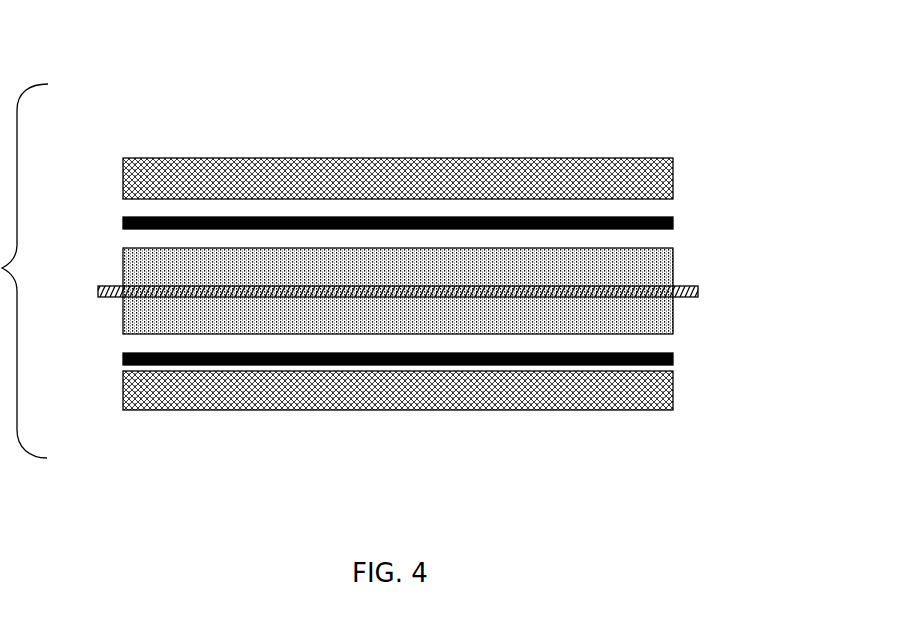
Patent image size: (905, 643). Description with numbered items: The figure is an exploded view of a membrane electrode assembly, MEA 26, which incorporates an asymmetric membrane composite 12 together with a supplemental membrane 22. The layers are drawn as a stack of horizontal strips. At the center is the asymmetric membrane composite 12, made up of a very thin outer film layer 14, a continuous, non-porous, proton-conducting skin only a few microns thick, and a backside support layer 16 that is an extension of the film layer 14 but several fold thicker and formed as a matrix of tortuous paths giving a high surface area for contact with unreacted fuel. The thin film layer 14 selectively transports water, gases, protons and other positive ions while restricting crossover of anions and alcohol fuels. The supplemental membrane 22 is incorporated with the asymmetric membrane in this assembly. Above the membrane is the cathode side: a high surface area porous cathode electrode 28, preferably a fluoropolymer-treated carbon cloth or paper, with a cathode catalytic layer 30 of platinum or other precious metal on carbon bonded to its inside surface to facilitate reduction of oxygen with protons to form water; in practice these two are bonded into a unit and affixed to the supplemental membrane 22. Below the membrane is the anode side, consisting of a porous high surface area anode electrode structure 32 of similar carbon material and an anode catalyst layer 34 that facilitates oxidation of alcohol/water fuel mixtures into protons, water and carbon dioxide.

The asymmetric membrane composite 12 is at (723, 285).
The thin outer film layer 14 is at (685, 287).
The backside support layer 16 is at (673, 323).
The supplemental membrane 22 is at (123, 259).
The membrane electrode assembly 26 is at (600, 122).
The cathode electrode 28 is at (236, 158).
The cathode catalytic layer 30 is at (673, 220).
The anode electrode structure 32 is at (302, 420).
The anode catalyst layer 34 is at (673, 358).